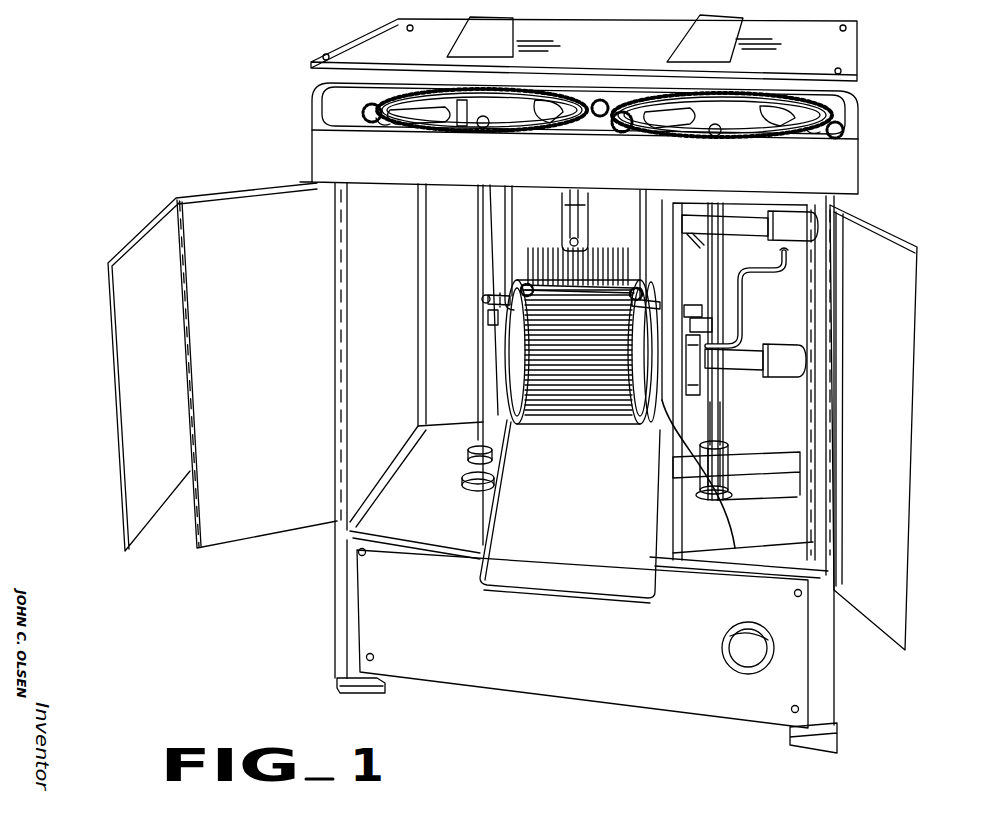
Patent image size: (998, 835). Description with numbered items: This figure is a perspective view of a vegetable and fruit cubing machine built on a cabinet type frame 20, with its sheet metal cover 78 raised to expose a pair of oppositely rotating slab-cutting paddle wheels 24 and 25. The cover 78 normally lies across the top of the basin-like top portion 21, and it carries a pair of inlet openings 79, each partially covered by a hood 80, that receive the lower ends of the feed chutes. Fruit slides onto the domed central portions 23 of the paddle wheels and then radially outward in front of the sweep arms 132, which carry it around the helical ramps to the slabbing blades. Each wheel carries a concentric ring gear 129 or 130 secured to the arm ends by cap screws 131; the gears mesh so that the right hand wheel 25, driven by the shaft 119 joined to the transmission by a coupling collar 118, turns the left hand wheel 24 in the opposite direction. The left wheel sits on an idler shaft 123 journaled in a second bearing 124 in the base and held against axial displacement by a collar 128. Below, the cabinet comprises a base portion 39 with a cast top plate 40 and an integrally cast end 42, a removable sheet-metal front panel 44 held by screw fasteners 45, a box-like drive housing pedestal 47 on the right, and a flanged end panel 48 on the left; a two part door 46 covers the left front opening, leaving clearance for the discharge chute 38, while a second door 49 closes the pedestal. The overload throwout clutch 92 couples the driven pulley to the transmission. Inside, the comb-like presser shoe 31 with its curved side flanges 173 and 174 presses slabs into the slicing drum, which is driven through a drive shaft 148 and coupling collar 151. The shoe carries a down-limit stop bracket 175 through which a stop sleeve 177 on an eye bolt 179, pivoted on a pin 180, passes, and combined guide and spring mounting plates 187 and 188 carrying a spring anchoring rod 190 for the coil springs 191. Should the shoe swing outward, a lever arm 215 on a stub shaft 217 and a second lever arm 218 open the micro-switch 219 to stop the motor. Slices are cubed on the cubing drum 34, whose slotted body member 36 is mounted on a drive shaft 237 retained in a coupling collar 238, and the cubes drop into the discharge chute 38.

The cabinet type frame 20 is at (458, 385).
The basin-like top portion 21 is at (322, 148).
The domed central portions 23 is at (507, 127).
The paddle wheel 24 is at (452, 105).
The paddle wheel 25 is at (752, 113).
The presser shoe 31 is at (540, 209).
The cubing drum 34 is at (567, 395).
The cubing drum body member 36 is at (612, 404).
The discharge chute 38 is at (576, 567).
The base portion 39 is at (340, 593).
The cast top plate 40 is at (443, 519).
The integrally cast end 42 is at (842, 618).
The front panel 44 is at (558, 652).
The screw fasteners 45 is at (366, 556).
The two part door 46 is at (142, 399).
The drive housing pedestal 47 is at (668, 482).
The end panel 48 is at (386, 286).
The second door 49 is at (872, 492).
The sheet metal cover 78 is at (565, 97).
The inlet openings 79 is at (503, 51).
The hood 80 is at (723, 51).
The overload throwout clutch 92 is at (745, 648).
The coupling collar 118 is at (711, 463).
The shaft 119 is at (708, 417).
The idler shaft 123 is at (490, 321).
The second bearing 124 is at (461, 477).
The collar 128 is at (468, 456).
The ring gear 129 is at (378, 124).
The ring gear 130 is at (812, 133).
The cap screws 131 is at (603, 99).
The sweep arms 132 is at (516, 105).
The drive shaft 148 is at (743, 225).
The coupling collar 151 is at (788, 220).
The side flange 173 is at (522, 242).
The side flange 174 is at (644, 219).
The down-limit stop bracket 175 is at (588, 206).
The down-limit stop sleeve 177 is at (578, 239).
The eye bolt 179 is at (576, 212).
The pin 180 is at (580, 188).
The combined slicing drum guide and spring mounting plate 187 is at (513, 278).
The combined slicing drum guide and spring mounting plate 188 is at (643, 303).
The spring anchoring rod 190 is at (484, 298).
The coil springs 191 is at (514, 286).
The lever arm 215 is at (658, 317).
The stub shaft 217 is at (704, 318).
The second lever arm 218 is at (708, 328).
The micro-switch 219 is at (688, 384).
The cubing drum drive shaft 237 is at (748, 358).
The coupling collar 238 is at (797, 364).